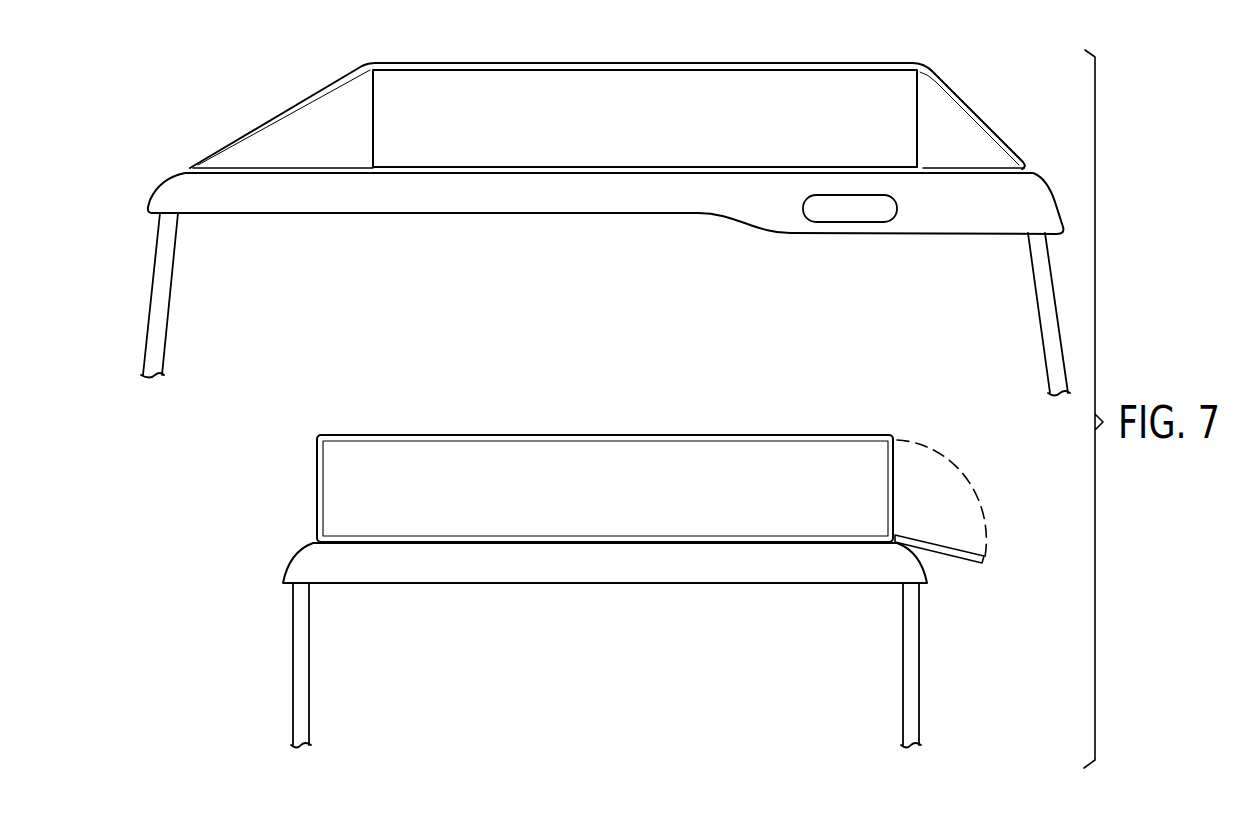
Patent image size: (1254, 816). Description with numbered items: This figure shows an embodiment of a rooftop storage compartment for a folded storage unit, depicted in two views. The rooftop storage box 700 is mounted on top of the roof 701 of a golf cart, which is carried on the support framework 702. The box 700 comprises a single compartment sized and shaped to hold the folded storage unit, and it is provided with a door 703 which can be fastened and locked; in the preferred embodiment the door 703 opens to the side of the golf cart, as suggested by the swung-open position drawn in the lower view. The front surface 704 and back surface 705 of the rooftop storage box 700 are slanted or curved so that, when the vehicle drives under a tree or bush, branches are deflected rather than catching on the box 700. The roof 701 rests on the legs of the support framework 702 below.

The rooftop storage box 700 is at (253, 98).
The roof 701 is at (768, 203).
The support framework 702 is at (153, 292).
The door 703 is at (840, 115).
The front surface 704 is at (283, 142).
The back surface 705 is at (942, 122).